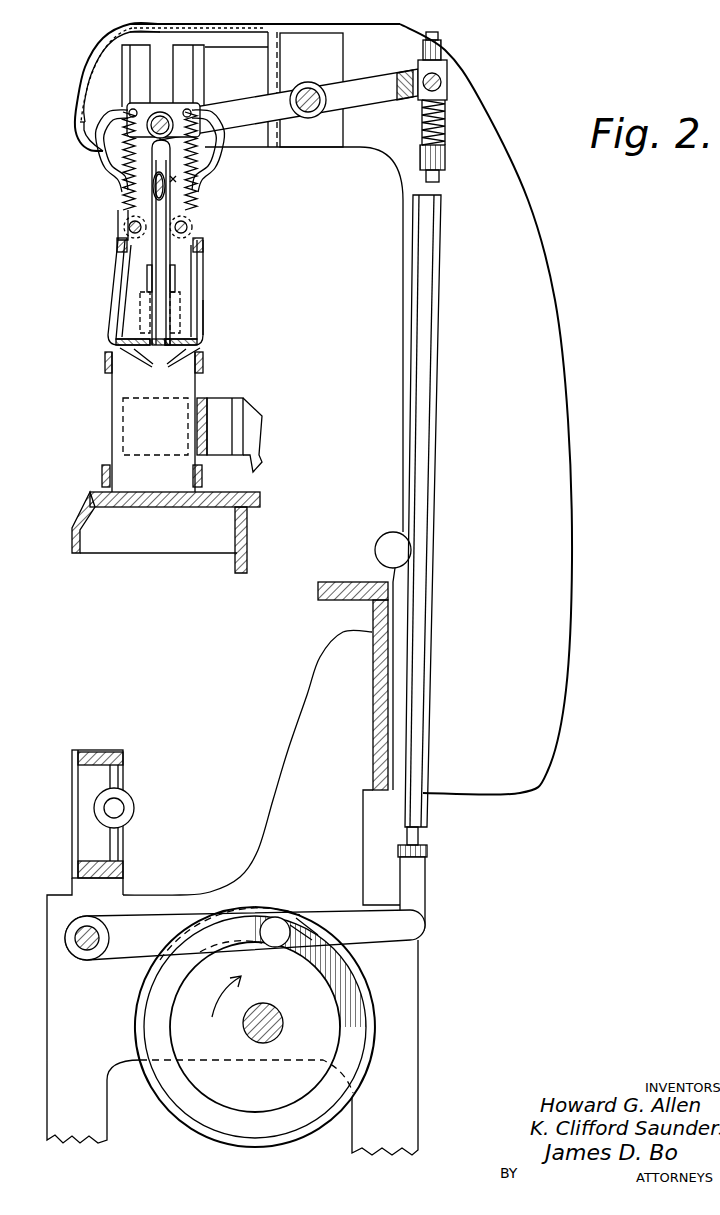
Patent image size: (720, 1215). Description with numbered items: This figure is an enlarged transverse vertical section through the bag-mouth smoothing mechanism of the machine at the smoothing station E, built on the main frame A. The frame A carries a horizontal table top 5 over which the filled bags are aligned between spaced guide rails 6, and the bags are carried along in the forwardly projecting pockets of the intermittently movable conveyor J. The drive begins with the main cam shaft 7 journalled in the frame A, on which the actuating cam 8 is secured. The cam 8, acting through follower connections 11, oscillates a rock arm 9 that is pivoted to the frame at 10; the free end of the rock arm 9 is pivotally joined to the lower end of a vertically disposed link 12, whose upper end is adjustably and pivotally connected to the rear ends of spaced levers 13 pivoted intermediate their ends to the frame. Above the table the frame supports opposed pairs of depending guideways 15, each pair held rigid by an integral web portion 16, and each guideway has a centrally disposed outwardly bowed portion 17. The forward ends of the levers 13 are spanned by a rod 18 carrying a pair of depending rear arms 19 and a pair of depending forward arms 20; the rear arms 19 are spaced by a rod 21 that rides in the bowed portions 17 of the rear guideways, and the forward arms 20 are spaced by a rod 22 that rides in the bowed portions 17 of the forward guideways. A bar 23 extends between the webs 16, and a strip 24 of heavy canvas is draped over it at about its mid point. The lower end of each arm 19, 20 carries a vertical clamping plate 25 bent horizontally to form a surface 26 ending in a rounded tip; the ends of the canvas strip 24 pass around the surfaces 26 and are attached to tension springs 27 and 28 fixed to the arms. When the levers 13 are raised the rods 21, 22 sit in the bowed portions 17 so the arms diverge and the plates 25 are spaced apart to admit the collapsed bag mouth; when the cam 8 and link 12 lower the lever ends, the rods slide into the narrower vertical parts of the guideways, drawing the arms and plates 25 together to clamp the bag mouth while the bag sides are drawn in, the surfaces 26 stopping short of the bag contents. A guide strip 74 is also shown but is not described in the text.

The table top 5 is at (255, 492).
The guide rails 6 is at (105, 362).
The main cam shaft 7 is at (248, 1030).
The actuating cam 8 is at (355, 1000).
The rock arm 9 is at (125, 952).
The pivotal connection 10 is at (78, 952).
The follower connections 11 is at (290, 928).
The link 12 is at (425, 526).
The levers 13 is at (352, 82).
The guideways 15 is at (132, 79).
The web portion 16 is at (203, 190).
The outwardly bowed portion 17 is at (100, 154).
The rod 18 is at (158, 112).
The rear arms 19 is at (184, 268).
The forward arms 20 is at (130, 268).
The rod 21 is at (192, 232).
The rod 22 is at (122, 232).
The bar 23 is at (126, 212).
The strip 24 is at (200, 318).
The clamping plate 25 is at (150, 308).
The surface 26 is at (165, 365).
The tension spring 27 is at (199, 212).
The tension spring 28 is at (126, 192).
The guide strip 74 is at (243, 47).
The main frame A is at (305, 694).
The smoothing station E is at (95, 45).
The conveyor J is at (280, 417).